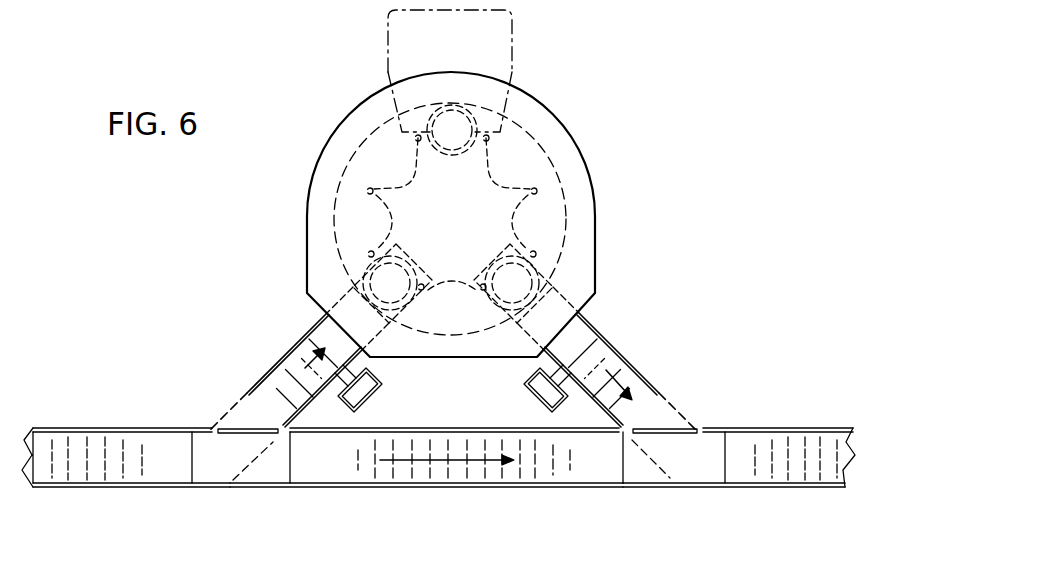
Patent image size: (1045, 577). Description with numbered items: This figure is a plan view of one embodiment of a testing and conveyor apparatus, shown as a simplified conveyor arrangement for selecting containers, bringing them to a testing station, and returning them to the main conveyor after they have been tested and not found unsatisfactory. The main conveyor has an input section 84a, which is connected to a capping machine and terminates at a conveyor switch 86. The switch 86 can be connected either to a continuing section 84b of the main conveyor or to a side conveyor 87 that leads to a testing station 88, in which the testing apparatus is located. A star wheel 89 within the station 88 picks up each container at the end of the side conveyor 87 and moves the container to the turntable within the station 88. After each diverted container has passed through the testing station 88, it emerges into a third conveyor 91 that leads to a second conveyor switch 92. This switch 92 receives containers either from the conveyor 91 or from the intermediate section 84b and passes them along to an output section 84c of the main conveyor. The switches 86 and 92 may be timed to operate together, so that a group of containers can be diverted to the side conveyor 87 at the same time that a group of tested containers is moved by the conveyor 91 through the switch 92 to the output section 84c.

The input section 84a is at (122, 487).
The continuing section 84b is at (478, 487).
The output section 84c is at (793, 485).
The conveyor switch 86 is at (208, 448).
The side conveyor 87 is at (272, 368).
The testing station 88 is at (597, 255).
The star wheel 89 is at (544, 165).
The third conveyor 91 is at (650, 381).
The second conveyor switch 92 is at (700, 443).